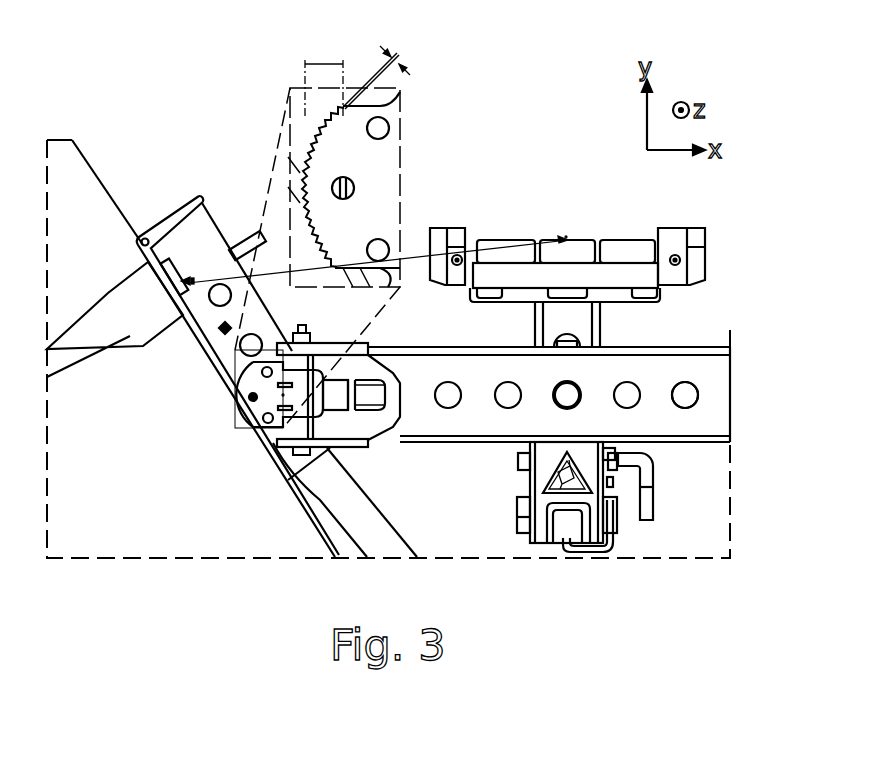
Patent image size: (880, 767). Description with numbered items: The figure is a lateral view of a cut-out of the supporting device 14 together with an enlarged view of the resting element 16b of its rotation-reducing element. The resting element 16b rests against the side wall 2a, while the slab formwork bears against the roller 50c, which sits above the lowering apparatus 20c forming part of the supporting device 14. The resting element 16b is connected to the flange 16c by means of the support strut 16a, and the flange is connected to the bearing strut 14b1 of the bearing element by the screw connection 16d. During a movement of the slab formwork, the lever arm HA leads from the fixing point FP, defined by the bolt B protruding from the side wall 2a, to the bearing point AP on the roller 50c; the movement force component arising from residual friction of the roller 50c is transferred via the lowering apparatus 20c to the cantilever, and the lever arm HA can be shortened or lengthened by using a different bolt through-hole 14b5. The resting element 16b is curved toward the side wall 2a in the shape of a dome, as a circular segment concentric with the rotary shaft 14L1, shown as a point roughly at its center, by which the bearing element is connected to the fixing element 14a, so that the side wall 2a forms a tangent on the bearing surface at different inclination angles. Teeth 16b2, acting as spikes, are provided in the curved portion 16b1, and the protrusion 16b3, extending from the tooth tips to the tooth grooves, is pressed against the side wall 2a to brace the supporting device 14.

The side wall 2a is at (96, 170).
The bolt B is at (80, 343).
The supporting device 14 is at (667, 533).
The fixing element 14a is at (220, 348).
The bearing strut 14b1 is at (688, 395).
The bolt through-hole 14b5 is at (700, 394).
The rotary shaft 14L1 is at (280, 398).
The support strut 16a is at (368, 394).
The resting element 16b is at (373, 187).
The curved portion 16b1 is at (323, 76).
The teeth 16b2 is at (347, 132).
The protrusion 16b3 is at (407, 70).
The flange 16c is at (363, 427).
The screw connection 16d is at (323, 312).
The lowering apparatus 20c is at (585, 325).
The roller 50c is at (628, 250).
The bearing point AP is at (563, 232).
The lever arm HA is at (421, 257).
The fixing point FP is at (177, 266).